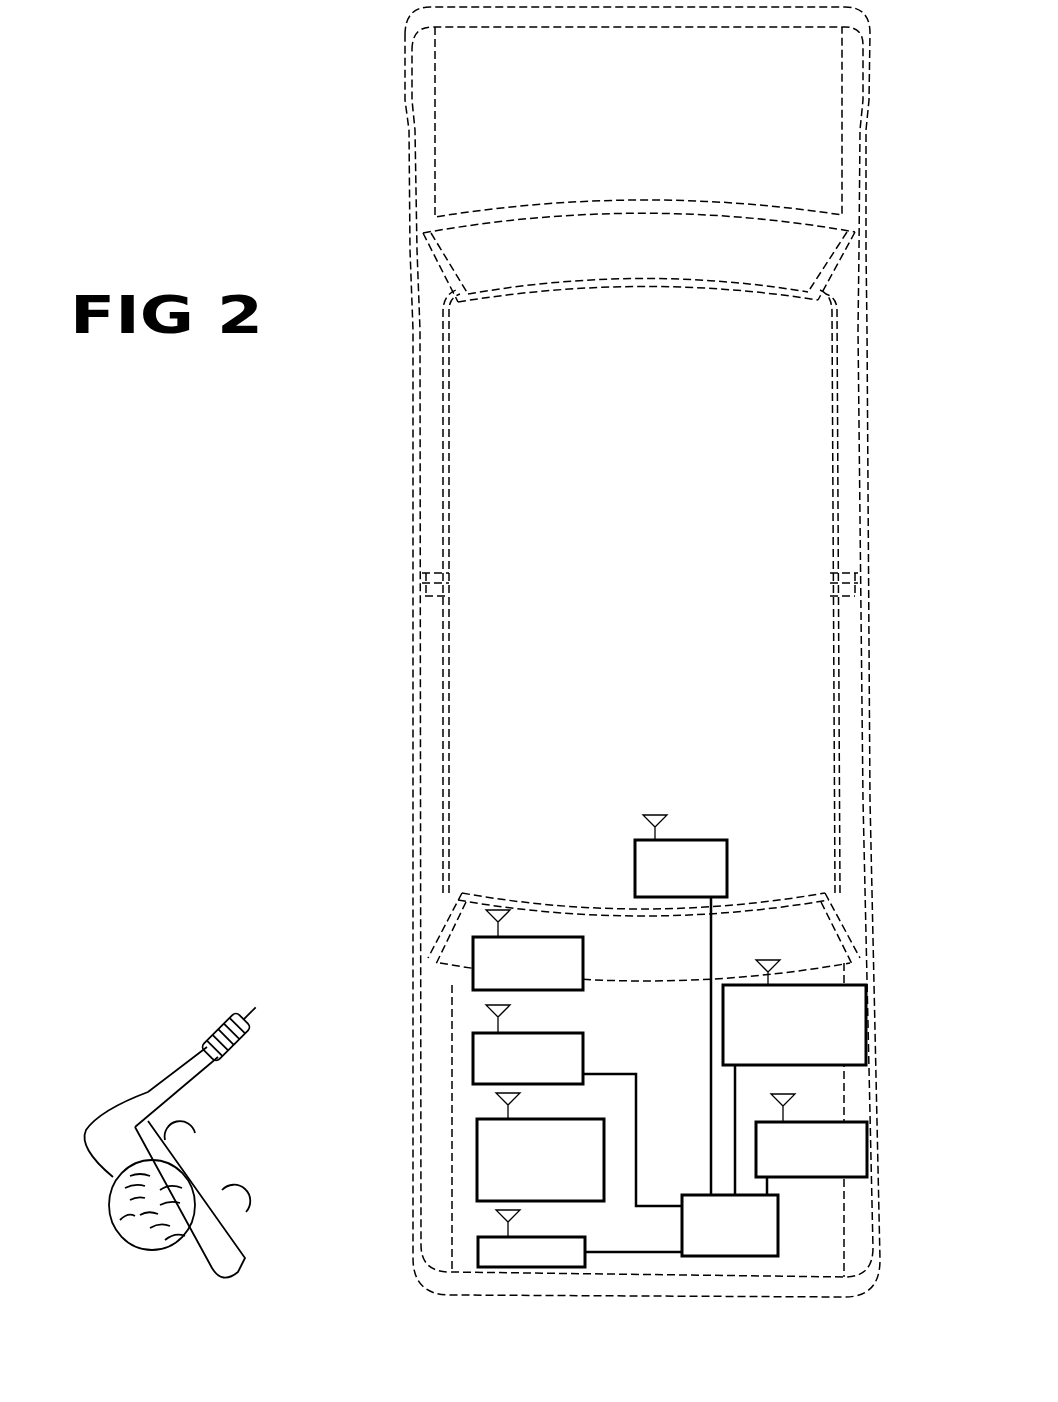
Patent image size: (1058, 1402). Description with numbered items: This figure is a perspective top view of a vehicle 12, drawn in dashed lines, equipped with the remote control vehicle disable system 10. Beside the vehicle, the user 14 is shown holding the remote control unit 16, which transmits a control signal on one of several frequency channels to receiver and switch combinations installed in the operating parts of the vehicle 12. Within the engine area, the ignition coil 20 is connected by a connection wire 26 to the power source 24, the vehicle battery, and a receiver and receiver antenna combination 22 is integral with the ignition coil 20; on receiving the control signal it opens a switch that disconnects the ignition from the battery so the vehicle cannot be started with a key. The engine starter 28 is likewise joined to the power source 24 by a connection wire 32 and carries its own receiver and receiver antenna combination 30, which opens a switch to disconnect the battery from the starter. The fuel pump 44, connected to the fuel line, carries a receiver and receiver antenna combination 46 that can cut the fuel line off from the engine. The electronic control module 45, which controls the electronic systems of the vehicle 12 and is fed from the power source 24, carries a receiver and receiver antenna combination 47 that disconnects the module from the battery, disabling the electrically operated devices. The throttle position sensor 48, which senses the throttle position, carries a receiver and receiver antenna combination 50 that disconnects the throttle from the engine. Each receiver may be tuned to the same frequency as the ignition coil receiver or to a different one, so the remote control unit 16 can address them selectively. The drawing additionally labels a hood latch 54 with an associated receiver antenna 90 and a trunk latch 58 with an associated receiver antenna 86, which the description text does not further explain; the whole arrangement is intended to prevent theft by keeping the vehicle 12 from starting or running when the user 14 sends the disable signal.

The remote control vehicle disable system 10 is at (268, 816).
The vehicle 12 is at (397, 667).
The user 14 is at (118, 1085).
The remote control unit 16 is at (215, 1003).
The ignition coil 20 is at (680, 840).
The receiver and receiver antenna combination 22 is at (650, 824).
The power source 24 is at (778, 1233).
The connection wire 26 is at (711, 964).
The engine starter 28 is at (515, 1267).
The receiver and receiver antenna combination 30 is at (517, 1213).
The connection wire 32 is at (614, 1251).
The fuel pump 44 is at (473, 978).
The electronic control module 45 is at (866, 1008).
The receiver and receiver antenna combination 46 is at (488, 921).
The receiver and receiver antenna combination 47 is at (760, 965).
The throttle position sensor 48 is at (477, 1162).
The receiver and receiver antenna combination 50 is at (517, 1096).
The hood latch 54 is at (473, 1074).
The trunk latch 58 is at (867, 1155).
The trunk latch antenna (receiver) 86 is at (788, 1100).
The hood latch antenna (receiver) 90 is at (488, 1016).